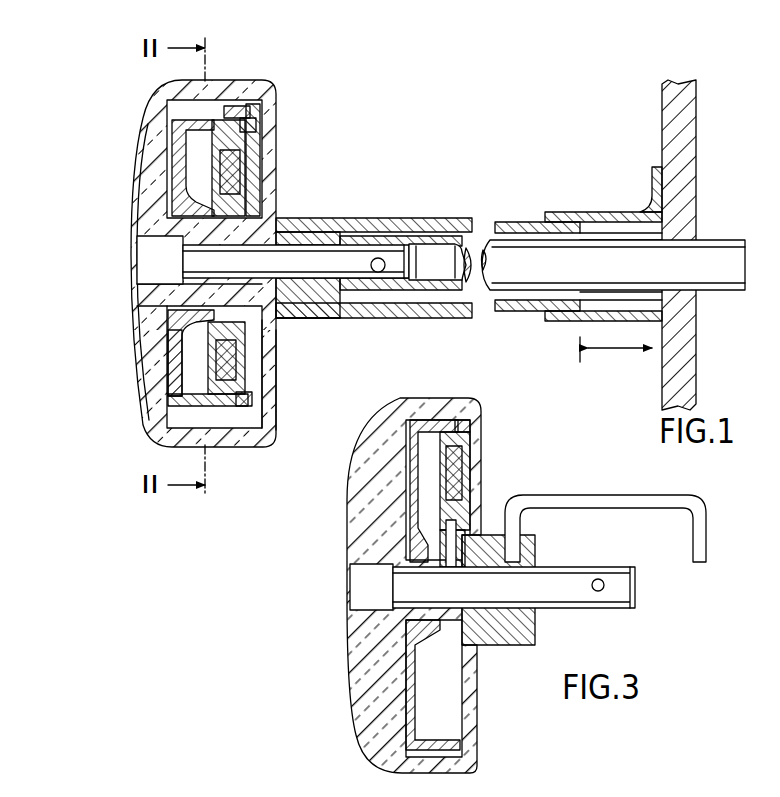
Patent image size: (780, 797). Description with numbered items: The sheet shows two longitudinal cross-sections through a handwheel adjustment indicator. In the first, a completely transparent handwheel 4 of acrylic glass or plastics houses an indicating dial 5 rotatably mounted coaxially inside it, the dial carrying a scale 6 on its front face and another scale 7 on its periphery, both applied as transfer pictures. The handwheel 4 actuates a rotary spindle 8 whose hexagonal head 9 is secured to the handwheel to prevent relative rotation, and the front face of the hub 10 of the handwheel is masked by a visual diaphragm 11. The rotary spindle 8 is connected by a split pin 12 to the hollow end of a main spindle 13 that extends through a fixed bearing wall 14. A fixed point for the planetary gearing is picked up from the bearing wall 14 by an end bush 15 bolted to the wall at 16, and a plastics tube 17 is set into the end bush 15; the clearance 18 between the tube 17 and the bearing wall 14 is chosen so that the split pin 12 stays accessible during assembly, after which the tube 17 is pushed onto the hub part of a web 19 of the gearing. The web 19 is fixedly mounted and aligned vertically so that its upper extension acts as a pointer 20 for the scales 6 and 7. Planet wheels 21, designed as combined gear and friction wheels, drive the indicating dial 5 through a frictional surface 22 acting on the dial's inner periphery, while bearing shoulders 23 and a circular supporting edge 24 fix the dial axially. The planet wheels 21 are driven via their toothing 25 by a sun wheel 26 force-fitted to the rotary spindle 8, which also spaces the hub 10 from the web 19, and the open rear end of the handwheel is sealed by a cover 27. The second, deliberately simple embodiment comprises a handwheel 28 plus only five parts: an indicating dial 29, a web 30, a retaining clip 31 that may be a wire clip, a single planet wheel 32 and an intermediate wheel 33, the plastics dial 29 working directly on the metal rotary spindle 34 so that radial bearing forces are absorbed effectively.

In FIG. 1, the handwheel 4 is at (165, 100).
In FIG. 1, the indicating dial 5 is at (180, 212).
In FIG. 1, the scale 6 is at (172, 368).
In FIG. 1, the scale 7 is at (185, 410).
In FIG. 1, the rotary spindle 8 is at (345, 255).
In FIG. 1, the hexagonal head 9 is at (152, 258).
In FIG. 1, the hub 10 is at (160, 298).
In FIG. 1, the visual diaphragm 11 is at (141, 190).
In FIG. 1, the split pin 12 is at (385, 258).
In FIG. 1, the main spindle 13 is at (452, 255).
In FIG. 1, the bearing wall 14 is at (676, 110).
In FIG. 1, the end bush 15 is at (553, 212).
In FIG. 1, the bolting point 16 is at (652, 186).
In FIG. 1, the plastics tube 17 is at (497, 222).
In FIG. 1, the clearance 18 is at (608, 350).
In FIG. 1, the web 19 is at (290, 218).
In FIG. 1, the pointer 20 is at (232, 112).
In FIG. 1, the planet wheels 21 is at (262, 140).
In FIG. 1, the frictional surface 22 is at (258, 135).
In FIG. 1, the bearing shoulders 23 is at (250, 390).
In FIG. 1, the circular supporting edge 24 is at (172, 335).
In FIG. 1, the toothing 25 is at (248, 122).
In FIG. 1, the sun wheel 26 is at (272, 318).
In FIG. 1, the cover 27 is at (276, 412).
In FIG. 3, the handwheel 28 is at (385, 618).
In FIG. 3, the indicating dial 29 is at (413, 488).
In FIG. 3, the web 30 is at (482, 500).
In FIG. 3, the retaining clip 31 is at (620, 508).
In FIG. 3, the planet wheel 32 is at (446, 476).
In FIG. 3, the intermediate wheel 33 is at (470, 446).
In FIG. 3, the rotary spindle 34 is at (566, 598).